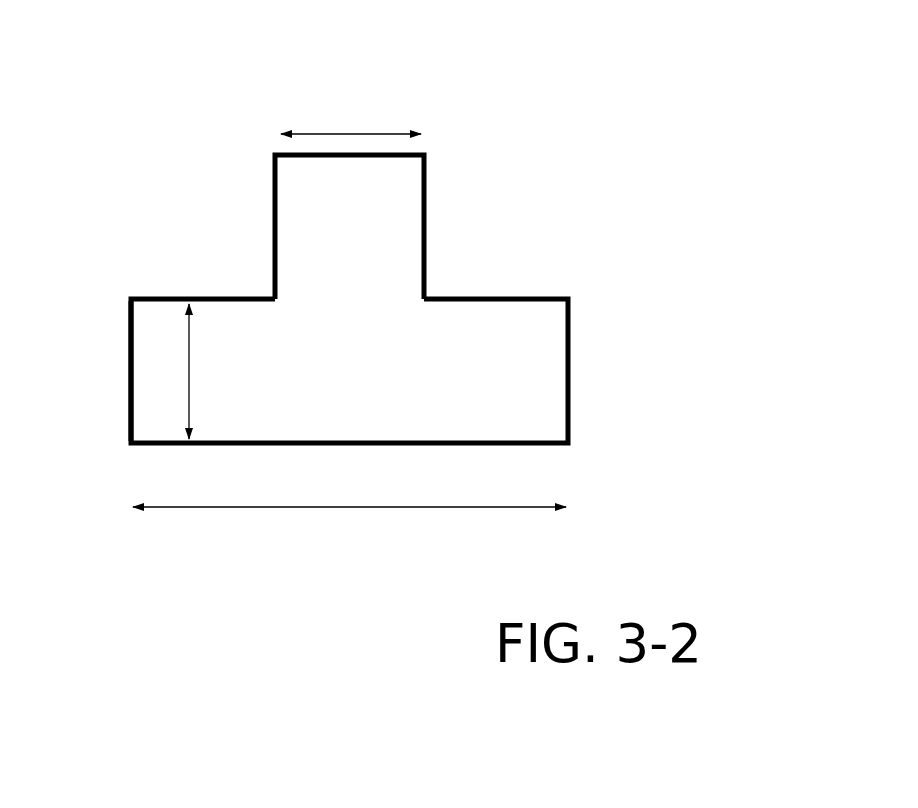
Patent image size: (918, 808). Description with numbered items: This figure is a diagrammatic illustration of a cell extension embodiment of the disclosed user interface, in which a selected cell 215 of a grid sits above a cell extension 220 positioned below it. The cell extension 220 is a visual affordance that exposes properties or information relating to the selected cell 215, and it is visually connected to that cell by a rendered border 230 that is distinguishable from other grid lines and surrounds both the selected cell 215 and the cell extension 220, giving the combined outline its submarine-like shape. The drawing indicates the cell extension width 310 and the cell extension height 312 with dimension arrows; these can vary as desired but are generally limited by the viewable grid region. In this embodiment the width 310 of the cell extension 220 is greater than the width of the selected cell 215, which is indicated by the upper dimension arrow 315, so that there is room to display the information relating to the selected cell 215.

The selected cell 215 is at (390, 250).
The cell extension 220 is at (527, 388).
The border 230 is at (129, 351).
The cell extension width 310 is at (330, 507).
The cell extension height 312 is at (190, 370).
The width of upper portion 315 is at (357, 134).